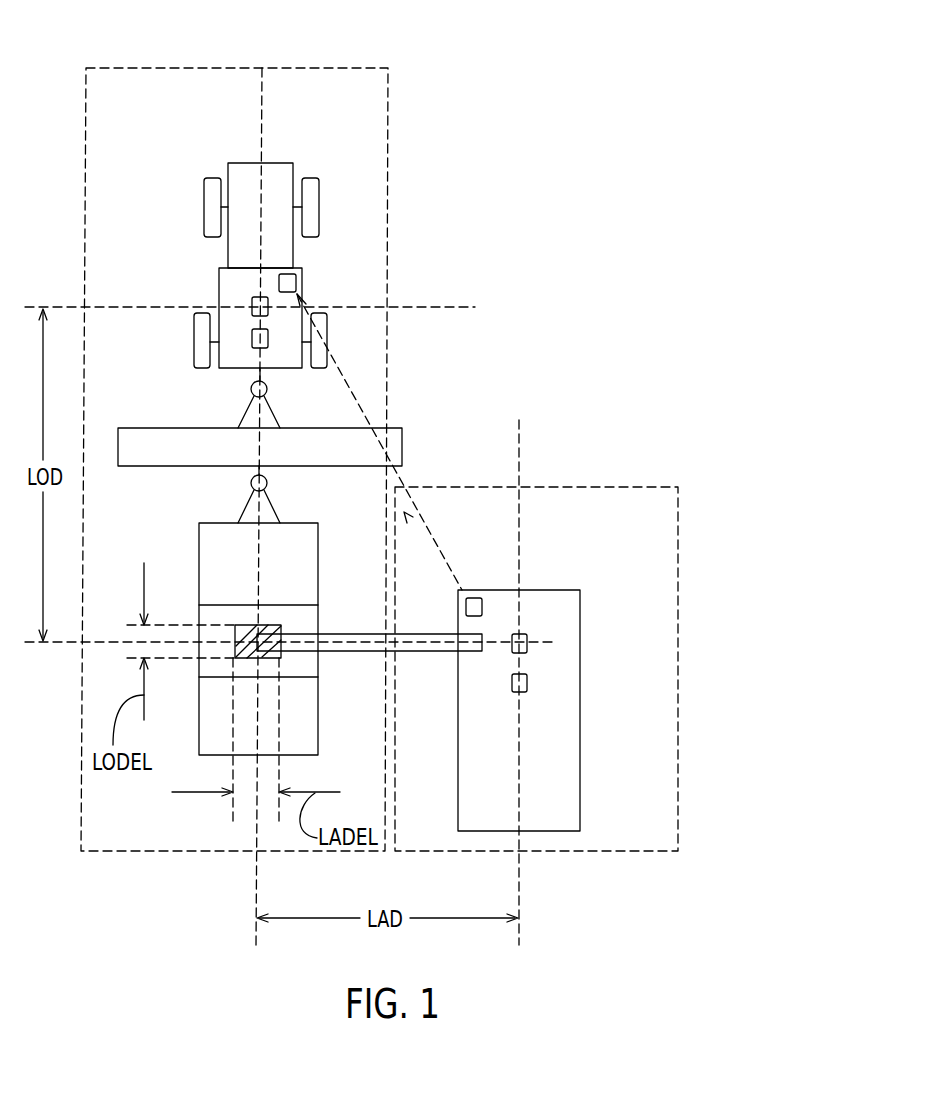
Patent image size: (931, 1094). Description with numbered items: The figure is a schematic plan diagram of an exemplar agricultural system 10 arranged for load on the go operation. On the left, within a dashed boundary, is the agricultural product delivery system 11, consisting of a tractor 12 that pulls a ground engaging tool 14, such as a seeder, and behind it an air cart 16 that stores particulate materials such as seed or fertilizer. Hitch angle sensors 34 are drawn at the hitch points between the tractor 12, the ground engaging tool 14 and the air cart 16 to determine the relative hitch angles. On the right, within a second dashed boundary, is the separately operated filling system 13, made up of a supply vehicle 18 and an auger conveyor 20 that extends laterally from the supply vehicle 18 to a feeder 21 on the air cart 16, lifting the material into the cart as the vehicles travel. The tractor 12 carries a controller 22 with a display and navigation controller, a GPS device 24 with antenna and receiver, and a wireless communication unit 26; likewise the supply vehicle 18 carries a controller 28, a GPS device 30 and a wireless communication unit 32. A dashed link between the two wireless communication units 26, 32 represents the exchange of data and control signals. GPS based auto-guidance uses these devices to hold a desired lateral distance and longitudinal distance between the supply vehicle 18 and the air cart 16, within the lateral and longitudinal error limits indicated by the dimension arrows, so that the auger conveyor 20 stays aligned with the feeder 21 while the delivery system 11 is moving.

The agricultural system 10 is at (503, 122).
The agricultural product delivery system 11 is at (298, 68).
The tractor 12 is at (276, 163).
The filling system 13 is at (565, 487).
The ground engaging tool 14 is at (393, 428).
The air cart 16 is at (222, 523).
The supply vehicle 18 is at (543, 590).
The auger conveyor 20 is at (345, 633).
The feeder 21 is at (253, 626).
The controller 22 is at (252, 338).
The GPS device 24 is at (252, 299).
The wireless communication unit 26 is at (296, 276).
The controller 28 is at (528, 680).
The GPS device 30 is at (528, 636).
The wireless communication unit 32 is at (471, 598).
The hitch angle sensors 34 is at (267, 390).